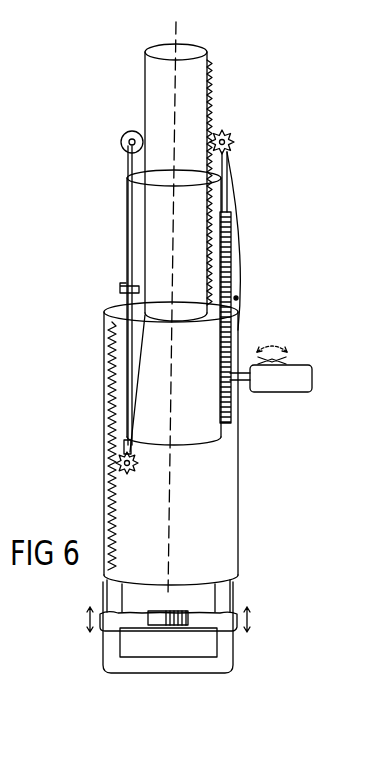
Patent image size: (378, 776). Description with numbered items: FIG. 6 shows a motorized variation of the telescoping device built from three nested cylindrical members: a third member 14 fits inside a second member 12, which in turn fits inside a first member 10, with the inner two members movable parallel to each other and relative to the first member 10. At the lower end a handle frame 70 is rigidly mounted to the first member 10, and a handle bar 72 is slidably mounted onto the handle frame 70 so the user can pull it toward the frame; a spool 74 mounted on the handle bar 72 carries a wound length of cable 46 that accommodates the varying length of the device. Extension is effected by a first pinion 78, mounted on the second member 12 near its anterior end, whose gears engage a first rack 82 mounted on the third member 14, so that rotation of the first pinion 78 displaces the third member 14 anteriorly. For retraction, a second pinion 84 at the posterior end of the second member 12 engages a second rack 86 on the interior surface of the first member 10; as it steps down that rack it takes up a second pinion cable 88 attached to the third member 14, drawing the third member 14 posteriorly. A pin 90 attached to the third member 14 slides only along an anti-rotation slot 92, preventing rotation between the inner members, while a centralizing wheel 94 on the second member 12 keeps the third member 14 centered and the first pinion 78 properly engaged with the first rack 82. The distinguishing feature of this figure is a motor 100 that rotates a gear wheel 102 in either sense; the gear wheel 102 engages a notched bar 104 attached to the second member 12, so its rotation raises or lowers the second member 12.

The first member 10 is at (110, 350).
The second member 12 is at (129, 205).
The third member 14 is at (196, 50).
The cable 46 is at (168, 543).
The handle frame 70 is at (208, 665).
The handle bar 72 is at (198, 627).
The spool 74 is at (157, 626).
The first pinion 78 is at (228, 133).
The first rack 82 is at (212, 80).
The second pinion 84 is at (117, 488).
The second rack 86 is at (105, 441).
The second pinion cable 88 is at (117, 392).
The pin 90 is at (128, 286).
The anti-rotation slot 92 is at (126, 240).
The centralizing wheel 94 is at (131, 130).
The motor 100 is at (272, 384).
The gear wheel 102 is at (238, 324).
The notched bar 104 is at (234, 236).